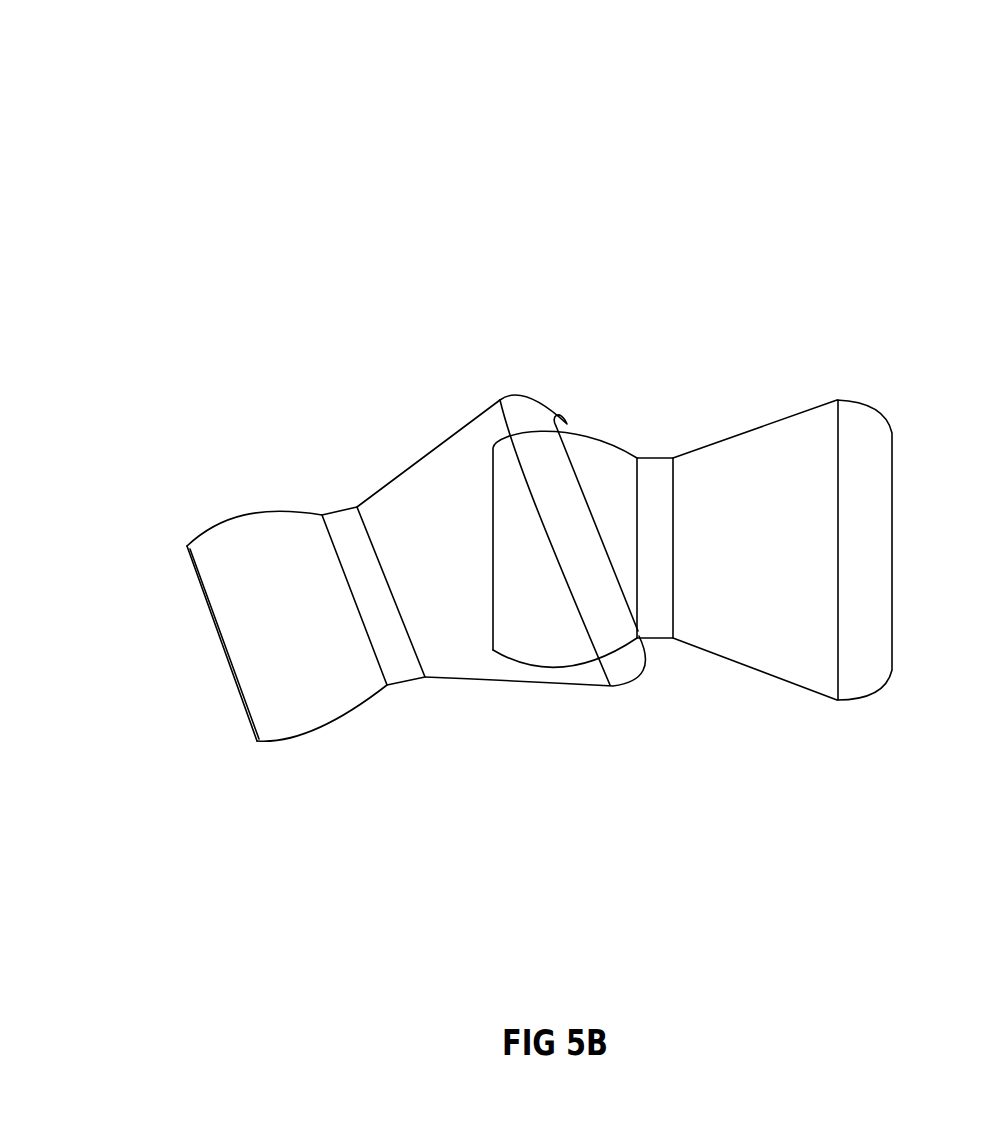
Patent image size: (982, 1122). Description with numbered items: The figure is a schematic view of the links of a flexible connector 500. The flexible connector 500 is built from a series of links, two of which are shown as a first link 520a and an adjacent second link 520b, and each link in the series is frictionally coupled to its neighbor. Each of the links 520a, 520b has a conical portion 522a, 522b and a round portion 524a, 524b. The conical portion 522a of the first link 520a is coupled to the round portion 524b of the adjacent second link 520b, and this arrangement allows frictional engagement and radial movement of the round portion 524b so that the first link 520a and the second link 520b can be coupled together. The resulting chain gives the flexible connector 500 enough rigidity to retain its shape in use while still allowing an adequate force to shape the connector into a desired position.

The flexible connector 500 is at (88, 95).
The first link 520a is at (273, 371).
The second link 520b is at (692, 325).
The conical portion 522a is at (396, 478).
The conical portion 522b is at (810, 403).
The round portion 524a is at (241, 512).
The round portion 524b is at (590, 428).